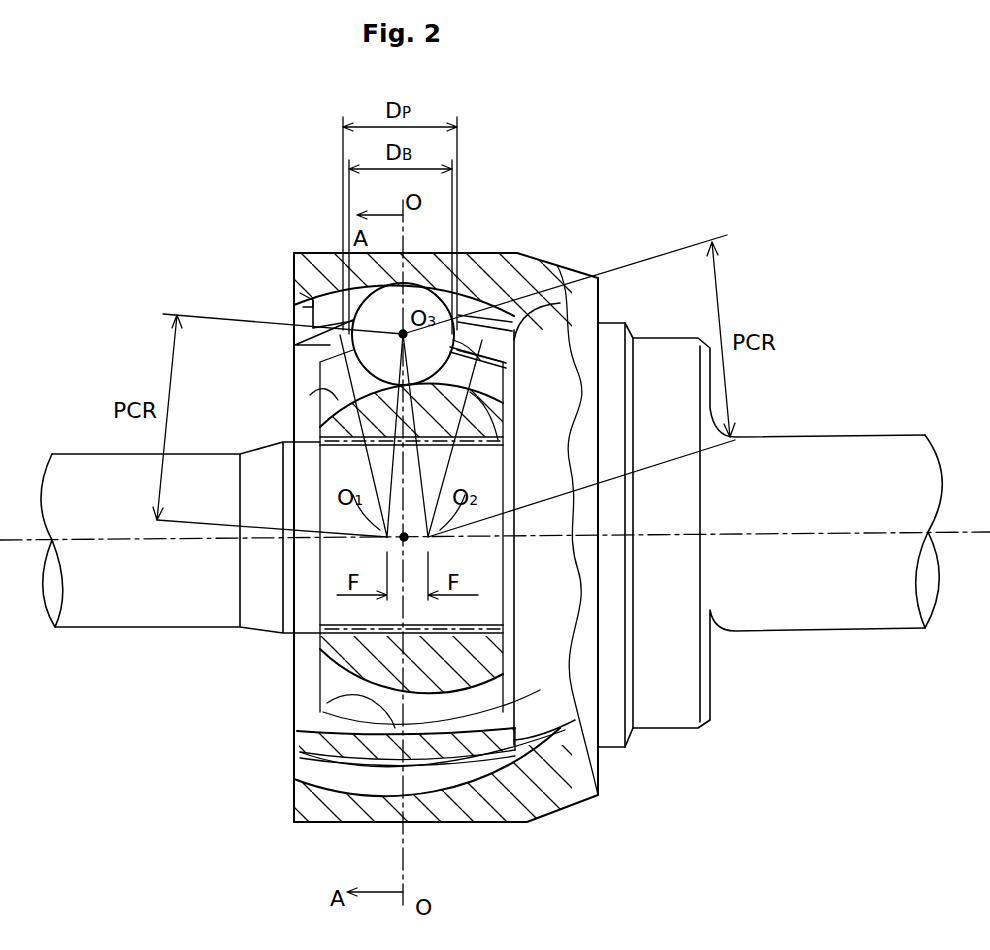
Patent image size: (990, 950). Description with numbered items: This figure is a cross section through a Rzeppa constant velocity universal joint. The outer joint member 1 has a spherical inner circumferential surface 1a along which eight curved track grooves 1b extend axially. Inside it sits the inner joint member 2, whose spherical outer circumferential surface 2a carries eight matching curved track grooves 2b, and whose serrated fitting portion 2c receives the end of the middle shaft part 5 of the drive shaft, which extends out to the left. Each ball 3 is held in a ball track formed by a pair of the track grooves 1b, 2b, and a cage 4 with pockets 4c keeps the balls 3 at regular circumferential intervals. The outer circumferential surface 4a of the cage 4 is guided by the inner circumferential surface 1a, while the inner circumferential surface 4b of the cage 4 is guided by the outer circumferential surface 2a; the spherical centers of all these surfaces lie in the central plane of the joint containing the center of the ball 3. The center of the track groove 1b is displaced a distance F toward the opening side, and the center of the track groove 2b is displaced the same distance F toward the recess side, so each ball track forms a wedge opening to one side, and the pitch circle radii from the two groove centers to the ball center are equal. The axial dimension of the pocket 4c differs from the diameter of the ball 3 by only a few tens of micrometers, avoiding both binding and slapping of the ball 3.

The outer joint member 1 is at (289, 266).
The inner circumferential surface 1a is at (433, 752).
The track groove 1b is at (330, 293).
The inner joint member 2 is at (318, 368).
The outer circumferential surface 2a is at (520, 753).
The track groove 2b is at (338, 400).
The serrated fitting portion 2c is at (498, 440).
The ball 3 is at (583, 393).
The cage 4 is at (482, 312).
The outer circumferential surface 4a is at (300, 752).
The inner circumferential surface 4b is at (323, 703).
The pocket 4c is at (485, 368).
The middle shaft part 5 is at (103, 627).